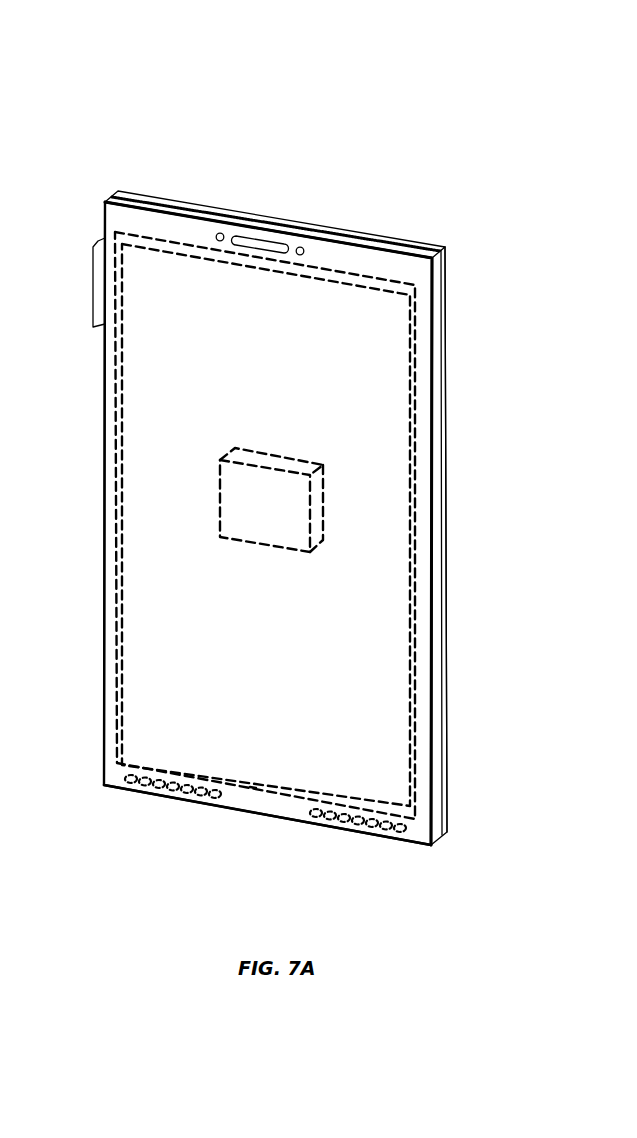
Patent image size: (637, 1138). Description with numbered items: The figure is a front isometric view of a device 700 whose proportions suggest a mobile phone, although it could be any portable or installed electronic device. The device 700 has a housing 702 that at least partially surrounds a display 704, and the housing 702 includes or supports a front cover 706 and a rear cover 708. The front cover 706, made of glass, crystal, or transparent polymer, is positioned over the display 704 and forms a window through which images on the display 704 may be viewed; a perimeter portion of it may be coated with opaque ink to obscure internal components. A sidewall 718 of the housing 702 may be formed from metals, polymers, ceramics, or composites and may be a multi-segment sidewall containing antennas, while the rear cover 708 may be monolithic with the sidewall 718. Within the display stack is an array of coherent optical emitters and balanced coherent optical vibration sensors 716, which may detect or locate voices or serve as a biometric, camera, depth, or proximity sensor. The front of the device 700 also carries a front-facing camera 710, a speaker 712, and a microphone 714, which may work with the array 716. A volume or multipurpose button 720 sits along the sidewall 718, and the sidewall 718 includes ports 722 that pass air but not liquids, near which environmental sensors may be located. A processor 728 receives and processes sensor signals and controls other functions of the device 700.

The device 700 is at (84, 60).
The housing 702 is at (445, 314).
The display 704 is at (415, 352).
The front cover 706 is at (433, 453).
The rear cover 708 is at (447, 406).
The front-facing camera 710 is at (300, 247).
The speaker 712 is at (263, 238).
The microphone 714 is at (220, 233).
The array of coherent optical emitters and balanced coherent optical vibration senso 716 is at (254, 789).
The sidewall 718 is at (447, 542).
The multipurpose button 720 is at (92, 280).
The port 722 is at (172, 796).
The processor 728 is at (318, 458).